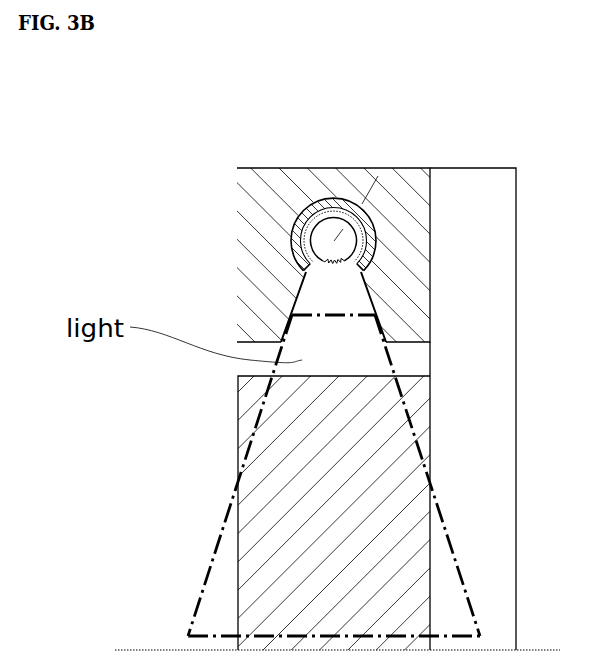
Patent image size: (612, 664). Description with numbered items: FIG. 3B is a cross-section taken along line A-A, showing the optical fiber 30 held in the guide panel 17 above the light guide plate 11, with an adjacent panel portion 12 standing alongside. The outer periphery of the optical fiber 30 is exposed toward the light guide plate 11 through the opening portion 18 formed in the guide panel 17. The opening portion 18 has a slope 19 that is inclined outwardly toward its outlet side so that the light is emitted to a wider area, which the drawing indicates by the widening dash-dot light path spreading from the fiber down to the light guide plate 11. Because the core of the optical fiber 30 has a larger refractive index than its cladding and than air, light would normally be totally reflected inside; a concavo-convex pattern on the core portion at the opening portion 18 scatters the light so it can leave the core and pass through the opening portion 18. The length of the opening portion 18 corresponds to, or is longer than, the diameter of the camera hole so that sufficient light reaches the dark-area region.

The light guide plate 11 is at (238, 382).
The side wall 12 is at (468, 210).
The guide panel 17 is at (262, 200).
The opening portion 18 is at (324, 299).
The slope 19 is at (285, 333).
The optical fiber 30 is at (327, 199).